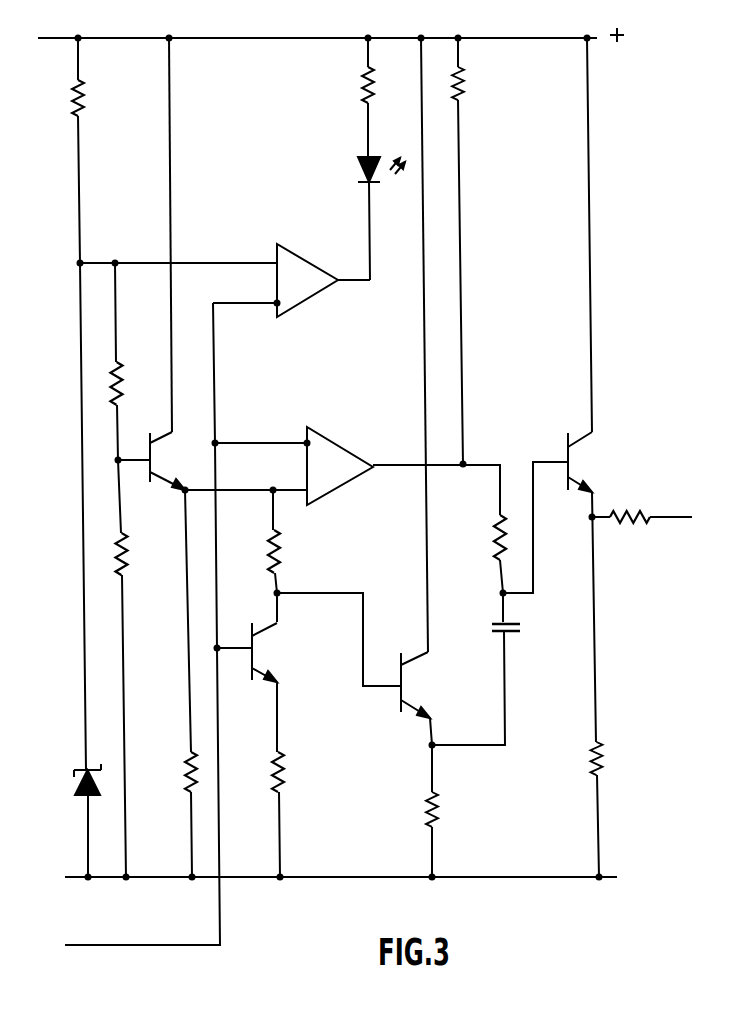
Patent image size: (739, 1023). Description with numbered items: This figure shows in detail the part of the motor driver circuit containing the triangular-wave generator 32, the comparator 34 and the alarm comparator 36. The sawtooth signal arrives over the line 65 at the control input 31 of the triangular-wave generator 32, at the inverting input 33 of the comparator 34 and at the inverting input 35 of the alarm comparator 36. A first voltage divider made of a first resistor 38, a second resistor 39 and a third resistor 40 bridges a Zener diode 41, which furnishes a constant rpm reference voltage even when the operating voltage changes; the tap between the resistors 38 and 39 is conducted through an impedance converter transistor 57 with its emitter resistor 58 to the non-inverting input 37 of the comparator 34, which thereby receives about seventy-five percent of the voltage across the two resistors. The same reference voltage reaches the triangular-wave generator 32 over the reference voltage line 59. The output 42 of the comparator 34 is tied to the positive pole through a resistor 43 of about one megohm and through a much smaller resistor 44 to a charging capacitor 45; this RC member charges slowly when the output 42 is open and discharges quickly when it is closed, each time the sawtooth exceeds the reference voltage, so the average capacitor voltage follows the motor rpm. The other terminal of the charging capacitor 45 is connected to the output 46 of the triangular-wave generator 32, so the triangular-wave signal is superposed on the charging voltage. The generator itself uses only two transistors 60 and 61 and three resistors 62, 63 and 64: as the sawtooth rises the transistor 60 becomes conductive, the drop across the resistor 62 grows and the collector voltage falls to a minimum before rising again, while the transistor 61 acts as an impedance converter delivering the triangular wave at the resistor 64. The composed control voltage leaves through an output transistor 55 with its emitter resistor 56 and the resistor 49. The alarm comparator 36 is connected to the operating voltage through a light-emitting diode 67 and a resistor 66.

The control input 31 is at (236, 645).
The triangular-wave generator 32 is at (356, 564).
The inverting input 33 is at (305, 437).
The comparator 34 is at (333, 452).
The inverting input 35 is at (272, 308).
The alarm comparator 36 is at (303, 290).
The non-inverting input 37 is at (305, 486).
The first resistor 38 is at (124, 560).
The second resistor 39 is at (120, 380).
The third resistor 40 is at (74, 97).
The Zener diode 41 is at (73, 789).
The output 42 is at (390, 462).
The resistor 43 is at (468, 83).
The resistor 44 is at (498, 541).
The charging capacitor 45 is at (510, 632).
The output 46 is at (435, 750).
The resistor 49 is at (635, 520).
The output transistor 55 is at (600, 455).
The emitter resistor 56 is at (605, 755).
The impedance converter transistor 57 is at (153, 460).
The emitter resistor 58 is at (186, 770).
The reference voltage line 59 is at (272, 509).
The transistor 60 is at (258, 648).
The transistor 61 is at (395, 692).
The resistor 62 is at (277, 540).
The resistor 63 is at (285, 780).
The resistor 64 is at (440, 810).
The line 65 is at (221, 915).
The resistor 66 is at (362, 88).
The light-emitting diode 67 is at (357, 168).